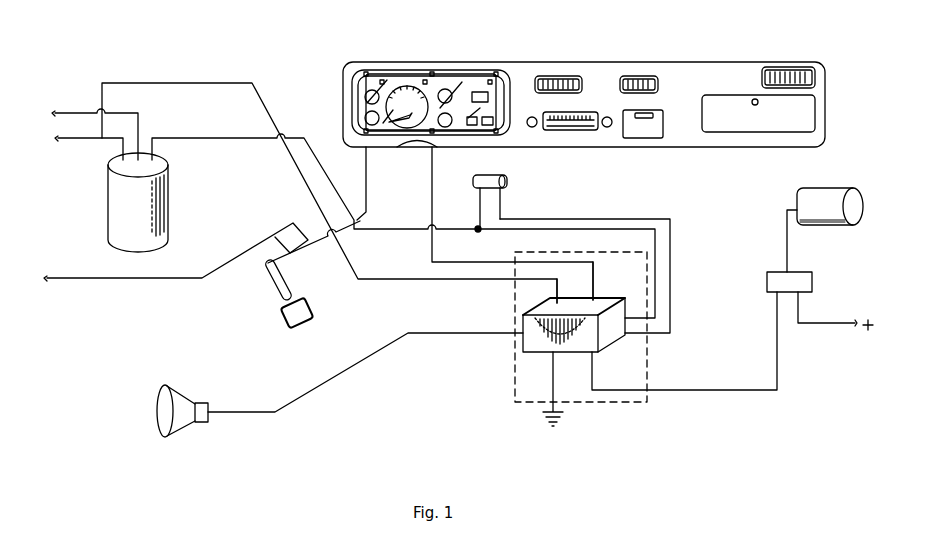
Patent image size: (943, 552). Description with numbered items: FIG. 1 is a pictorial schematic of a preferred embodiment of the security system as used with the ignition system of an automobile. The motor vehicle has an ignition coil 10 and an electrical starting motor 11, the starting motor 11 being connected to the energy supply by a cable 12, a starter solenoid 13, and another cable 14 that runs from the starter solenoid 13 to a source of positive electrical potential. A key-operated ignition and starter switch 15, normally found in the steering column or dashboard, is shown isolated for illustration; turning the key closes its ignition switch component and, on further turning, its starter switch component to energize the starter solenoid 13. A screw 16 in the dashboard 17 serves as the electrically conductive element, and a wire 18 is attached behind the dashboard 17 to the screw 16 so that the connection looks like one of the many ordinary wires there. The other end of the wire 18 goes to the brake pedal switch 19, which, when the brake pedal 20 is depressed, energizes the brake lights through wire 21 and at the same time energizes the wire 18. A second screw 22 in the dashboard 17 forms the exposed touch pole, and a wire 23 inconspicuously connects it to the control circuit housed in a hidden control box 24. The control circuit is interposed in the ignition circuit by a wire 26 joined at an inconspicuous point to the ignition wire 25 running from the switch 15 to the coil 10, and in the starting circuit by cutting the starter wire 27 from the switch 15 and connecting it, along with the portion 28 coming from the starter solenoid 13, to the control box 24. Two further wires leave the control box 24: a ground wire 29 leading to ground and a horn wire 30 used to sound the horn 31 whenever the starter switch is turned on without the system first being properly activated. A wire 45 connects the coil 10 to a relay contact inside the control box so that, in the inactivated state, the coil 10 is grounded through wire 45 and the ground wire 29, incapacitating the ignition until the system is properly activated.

The ignition coil 10 is at (115, 203).
The electrical starting motor 11 is at (837, 188).
The cable 12 is at (789, 250).
The starter solenoid 13 is at (768, 272).
The cable 14 is at (826, 323).
The ignition and starter switch 15 is at (490, 175).
The screw 16 is at (357, 150).
The dashboard 17 is at (522, 72).
The wire 18 is at (367, 195).
The brake pedal switch 19 is at (290, 258).
The brake pedal 20 is at (308, 303).
The wire 21 is at (247, 250).
The screw 22 is at (433, 153).
The wire 23 is at (429, 192).
The control box 24 is at (548, 348).
The ignition wire 25 is at (197, 138).
The wire 26 is at (478, 232).
The starter wire 27 is at (566, 218).
The portion of the starter wire 28 is at (680, 388).
The ground wire 29 is at (556, 406).
The horn wire 30 is at (315, 389).
The horn 31 is at (182, 420).
The wire 45 is at (178, 83).